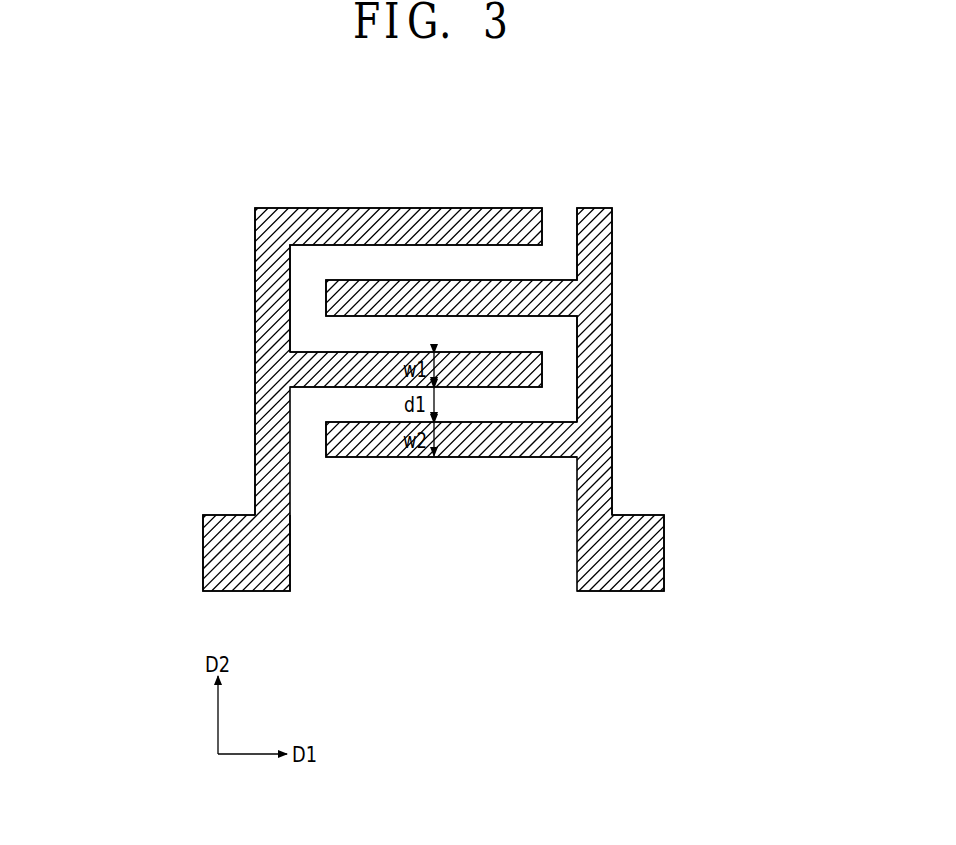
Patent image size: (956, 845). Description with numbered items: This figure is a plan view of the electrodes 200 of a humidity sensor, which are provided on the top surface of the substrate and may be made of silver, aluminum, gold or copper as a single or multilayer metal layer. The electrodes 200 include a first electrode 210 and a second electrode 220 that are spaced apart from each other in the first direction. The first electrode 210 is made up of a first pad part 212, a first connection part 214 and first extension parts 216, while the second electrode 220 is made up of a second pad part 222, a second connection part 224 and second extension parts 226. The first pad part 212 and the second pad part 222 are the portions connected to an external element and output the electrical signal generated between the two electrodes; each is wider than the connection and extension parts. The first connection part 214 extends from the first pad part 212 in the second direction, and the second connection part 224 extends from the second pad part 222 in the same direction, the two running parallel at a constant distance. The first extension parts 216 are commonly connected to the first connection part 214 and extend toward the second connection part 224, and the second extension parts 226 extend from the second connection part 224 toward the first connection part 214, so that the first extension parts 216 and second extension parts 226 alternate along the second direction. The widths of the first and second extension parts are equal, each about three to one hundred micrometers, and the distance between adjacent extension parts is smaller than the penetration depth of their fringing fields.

The electrodes 200 is at (750, 156).
The first electrode 210 is at (113, 295).
The first pad part 212 is at (215, 550).
The first connection part 214 is at (255, 300).
The first extension parts 216 is at (312, 367).
The second electrode 220 is at (752, 365).
The second pad part 222 is at (650, 552).
The second connection part 224 is at (605, 376).
The second extension parts 226 is at (557, 438).